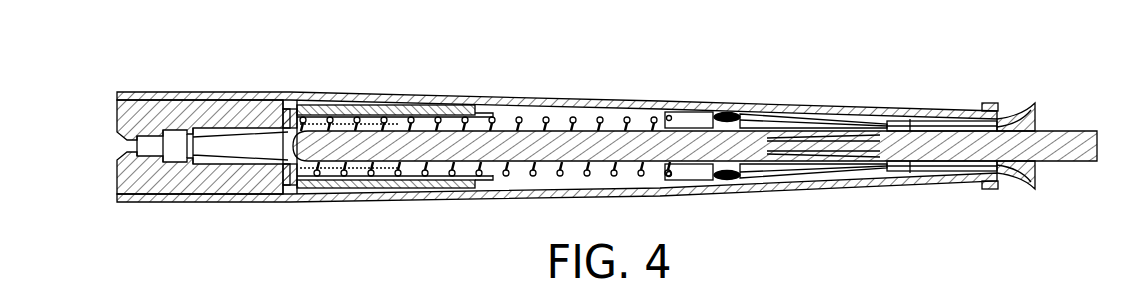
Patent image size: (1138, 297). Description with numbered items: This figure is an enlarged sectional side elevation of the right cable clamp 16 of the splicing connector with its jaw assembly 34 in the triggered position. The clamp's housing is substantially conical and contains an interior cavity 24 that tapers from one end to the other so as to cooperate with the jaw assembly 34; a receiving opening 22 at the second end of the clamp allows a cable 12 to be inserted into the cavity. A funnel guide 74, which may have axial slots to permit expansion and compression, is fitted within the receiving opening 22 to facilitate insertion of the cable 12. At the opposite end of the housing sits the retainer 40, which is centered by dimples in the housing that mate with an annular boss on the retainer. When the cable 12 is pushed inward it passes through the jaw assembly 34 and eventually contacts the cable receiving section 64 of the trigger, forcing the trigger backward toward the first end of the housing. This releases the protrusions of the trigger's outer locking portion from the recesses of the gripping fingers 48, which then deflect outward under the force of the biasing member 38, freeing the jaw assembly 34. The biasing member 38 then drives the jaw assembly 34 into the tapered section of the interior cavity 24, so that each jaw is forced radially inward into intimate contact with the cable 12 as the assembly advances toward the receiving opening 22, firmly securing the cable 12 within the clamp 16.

The cable 12 is at (1073, 162).
The second cable clamp 16 is at (240, 88).
The receiving opening 22 is at (1038, 123).
The interior cavity 24 is at (614, 118).
The jaw assembly 34 is at (788, 122).
The biasing member 38 is at (543, 117).
The retainer 40 is at (160, 102).
The gripping fingers 48 is at (413, 103).
The cable receiving section 64 is at (286, 100).
The funnel guide 74 is at (1012, 108).